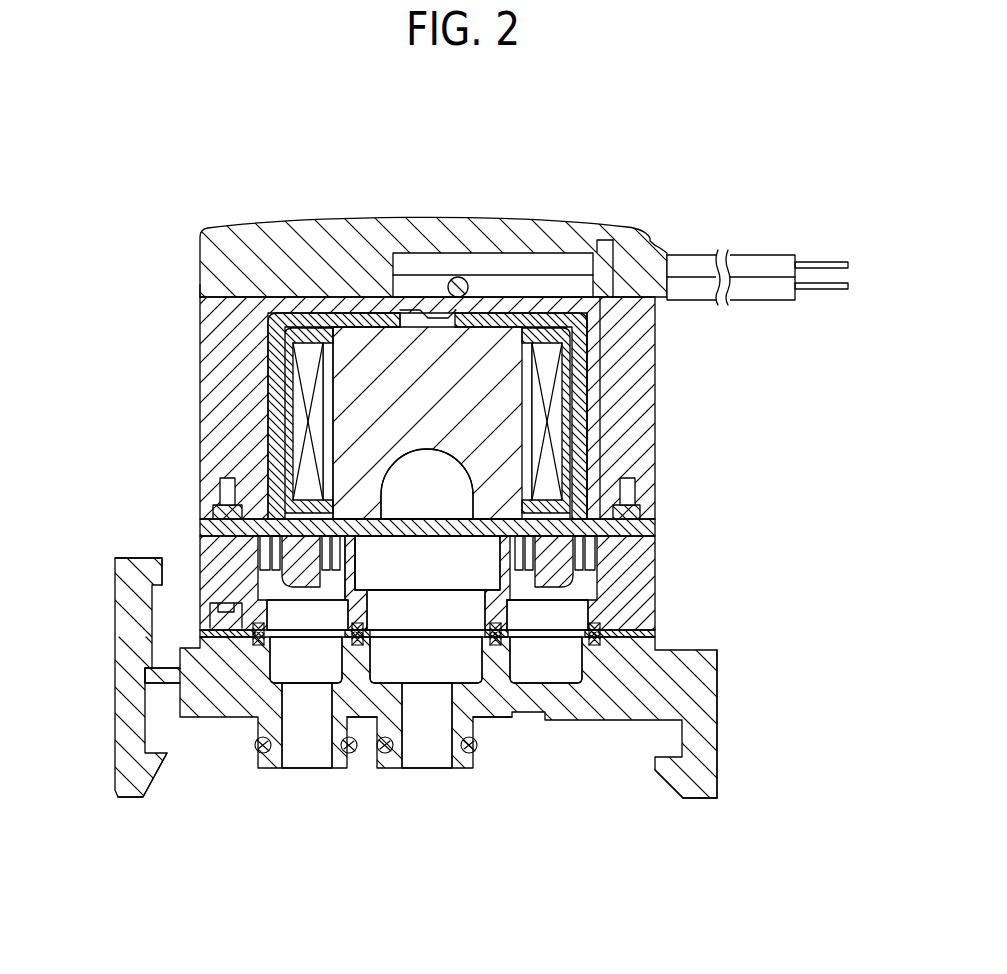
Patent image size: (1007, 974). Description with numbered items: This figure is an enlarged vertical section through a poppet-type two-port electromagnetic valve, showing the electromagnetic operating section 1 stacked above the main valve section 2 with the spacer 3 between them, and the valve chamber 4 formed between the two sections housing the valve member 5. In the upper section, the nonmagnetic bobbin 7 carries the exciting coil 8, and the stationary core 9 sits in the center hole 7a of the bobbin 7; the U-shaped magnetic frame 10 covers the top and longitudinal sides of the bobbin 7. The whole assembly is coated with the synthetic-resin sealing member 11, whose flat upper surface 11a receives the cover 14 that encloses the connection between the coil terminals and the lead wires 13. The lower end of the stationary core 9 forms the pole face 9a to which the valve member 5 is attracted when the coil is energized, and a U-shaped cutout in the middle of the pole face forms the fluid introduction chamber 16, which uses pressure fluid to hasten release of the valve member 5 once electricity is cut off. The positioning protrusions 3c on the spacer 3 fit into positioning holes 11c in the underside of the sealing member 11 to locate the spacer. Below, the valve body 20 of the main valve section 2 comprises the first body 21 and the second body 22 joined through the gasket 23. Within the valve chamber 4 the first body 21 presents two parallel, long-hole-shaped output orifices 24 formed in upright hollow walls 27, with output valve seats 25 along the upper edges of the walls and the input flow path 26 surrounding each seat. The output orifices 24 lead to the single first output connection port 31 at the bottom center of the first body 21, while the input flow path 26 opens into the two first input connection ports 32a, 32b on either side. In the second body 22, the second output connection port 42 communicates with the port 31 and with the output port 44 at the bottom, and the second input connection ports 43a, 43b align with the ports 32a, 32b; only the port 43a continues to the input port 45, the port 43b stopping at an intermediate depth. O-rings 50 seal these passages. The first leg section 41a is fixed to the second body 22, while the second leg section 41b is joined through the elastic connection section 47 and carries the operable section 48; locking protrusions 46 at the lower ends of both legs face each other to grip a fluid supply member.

The electromagnetic operating section 1 is at (645, 160).
The main valve section 2 is at (756, 553).
The spacer 3 is at (645, 531).
The positioning protrusions 3c is at (232, 515).
The valve chamber 4 is at (577, 488).
The valve member 5 is at (285, 553).
The bobbin 7 is at (300, 340).
The center hole 7a is at (348, 322).
The exciting coil 8 is at (308, 371).
The stationary core 9 is at (430, 352).
The pole face 9a is at (468, 538).
The magnetic frame 10 is at (578, 354).
The sealing member 11 is at (213, 302).
The upper surface 11a is at (245, 290).
The positioning holes 11c is at (222, 488).
The lead wires 13 is at (834, 285).
The cover 14 is at (500, 230).
The fluid introduction chamber 16 is at (439, 501).
The valve body 20 is at (800, 603).
The first body 21 is at (668, 598).
The second body 22 is at (722, 697).
The gasket 23 is at (622, 637).
The output orifices 24 is at (440, 572).
The output valve seats 25 is at (342, 506).
The input flow path 26 is at (308, 584).
The hollow walls 27 is at (532, 557).
The first output connection port 31 is at (448, 705).
The first input connection port 32a is at (368, 718).
The first input connection port 32b is at (552, 620).
The first leg section 41a is at (720, 746).
The second leg section 41b is at (128, 735).
The second output connection port 42 is at (441, 672).
The second input connection port 43a is at (322, 672).
The second input connection port 43b is at (563, 672).
The output port 44 is at (423, 770).
The input port 45 is at (307, 770).
The locking protrusions 46 is at (150, 772).
The elastic connection section 47 is at (167, 672).
The operable section 48 is at (118, 576).
The O-rings 50 is at (255, 746).